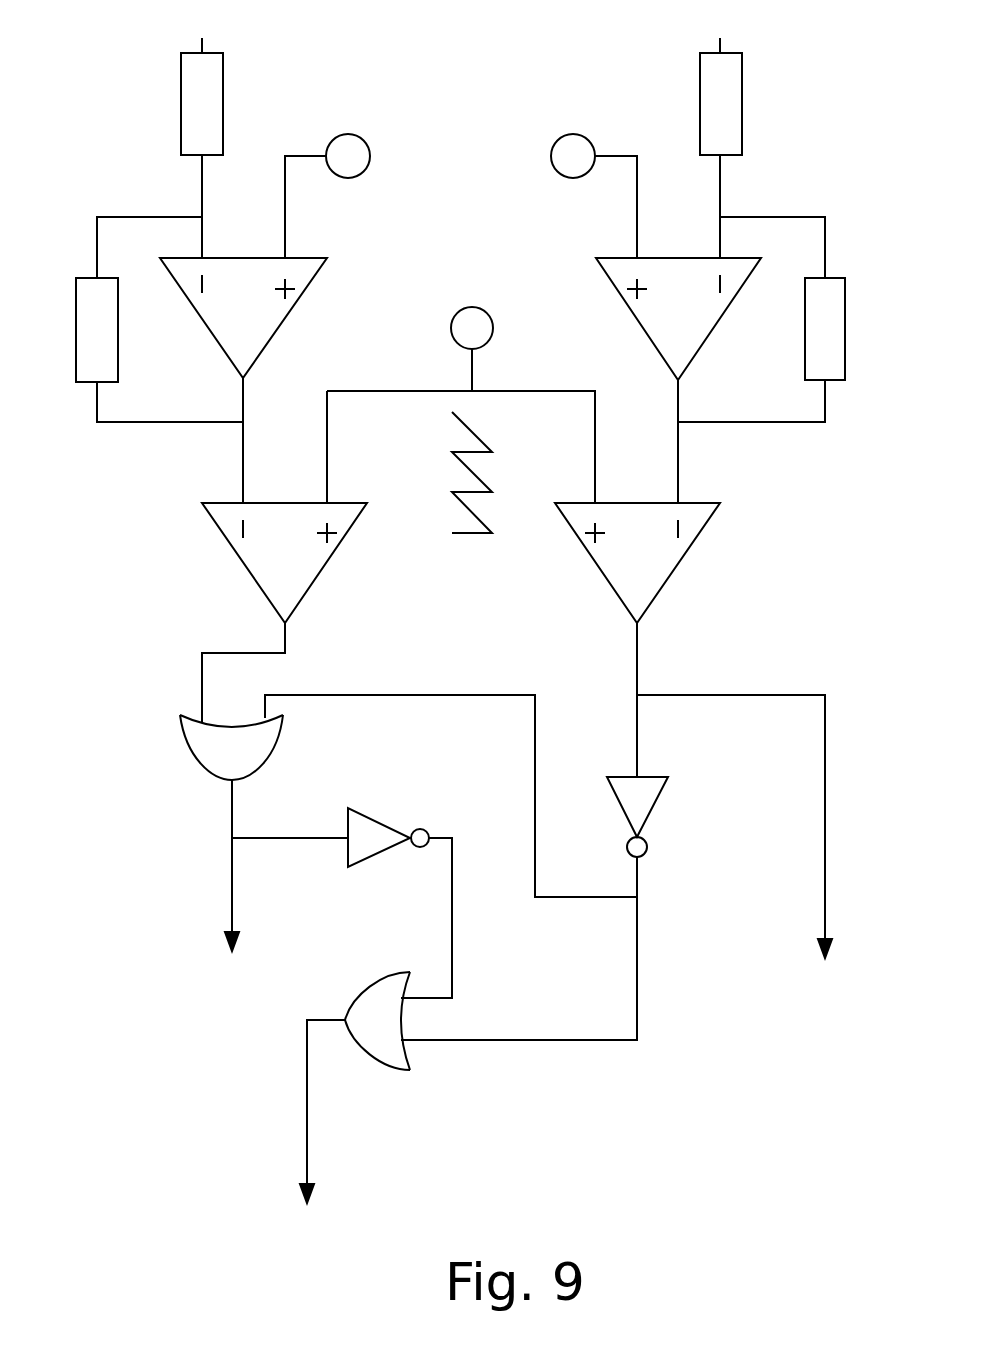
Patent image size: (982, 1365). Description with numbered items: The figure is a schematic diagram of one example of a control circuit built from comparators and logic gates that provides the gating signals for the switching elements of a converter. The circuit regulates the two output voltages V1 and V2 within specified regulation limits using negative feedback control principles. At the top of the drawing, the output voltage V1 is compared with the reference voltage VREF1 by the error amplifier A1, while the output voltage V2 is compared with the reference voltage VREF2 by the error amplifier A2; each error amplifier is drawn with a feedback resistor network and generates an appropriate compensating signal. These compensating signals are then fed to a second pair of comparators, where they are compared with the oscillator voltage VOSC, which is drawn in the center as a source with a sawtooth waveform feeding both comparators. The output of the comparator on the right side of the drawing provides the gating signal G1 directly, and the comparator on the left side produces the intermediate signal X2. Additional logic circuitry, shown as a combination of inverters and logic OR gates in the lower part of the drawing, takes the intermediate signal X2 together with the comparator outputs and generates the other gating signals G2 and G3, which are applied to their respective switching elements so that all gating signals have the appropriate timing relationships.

The output voltage V1 is at (721, 129).
The output voltage V2 is at (202, 129).
The reference voltage VREF1 is at (593, 177).
The reference voltage VREF2 is at (327, 177).
The oscillator voltage VOSC is at (461, 401).
The error amplifier A1 is at (678, 319).
The error amplifier A2 is at (243, 318).
The intermediate signal X2 is at (243, 667).
The gating signal G1 is at (759, 826).
The gating signal G2 is at (215, 865).
The gating signal G3 is at (300, 1111).